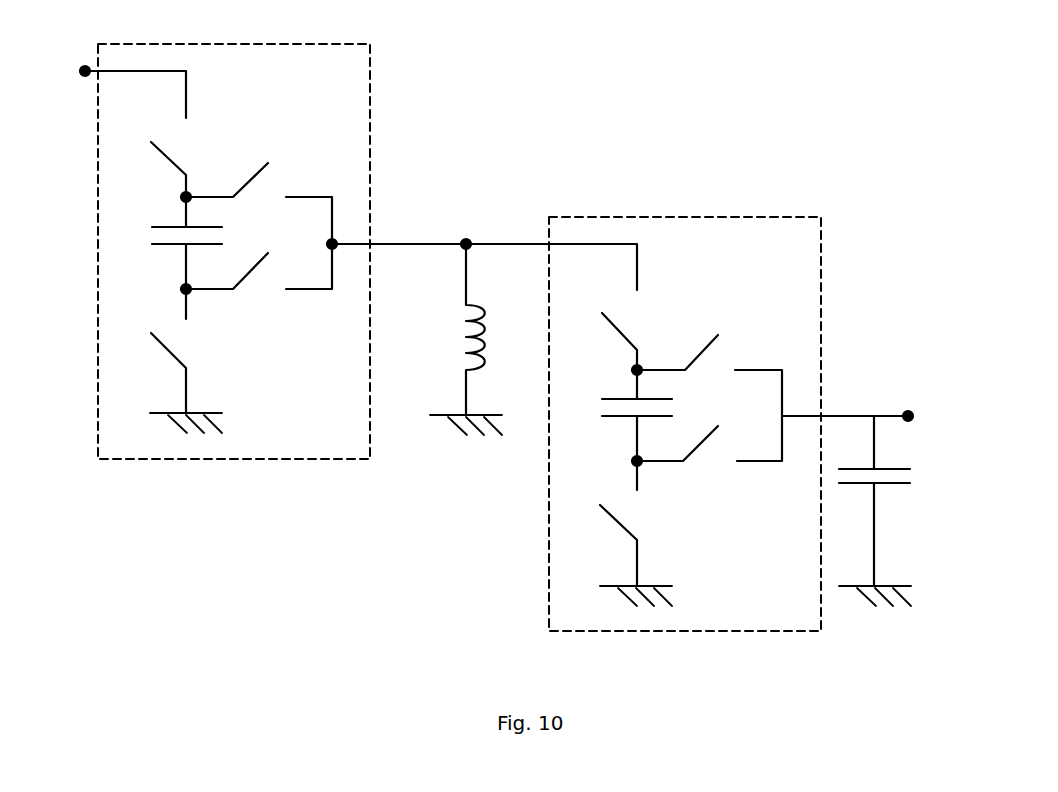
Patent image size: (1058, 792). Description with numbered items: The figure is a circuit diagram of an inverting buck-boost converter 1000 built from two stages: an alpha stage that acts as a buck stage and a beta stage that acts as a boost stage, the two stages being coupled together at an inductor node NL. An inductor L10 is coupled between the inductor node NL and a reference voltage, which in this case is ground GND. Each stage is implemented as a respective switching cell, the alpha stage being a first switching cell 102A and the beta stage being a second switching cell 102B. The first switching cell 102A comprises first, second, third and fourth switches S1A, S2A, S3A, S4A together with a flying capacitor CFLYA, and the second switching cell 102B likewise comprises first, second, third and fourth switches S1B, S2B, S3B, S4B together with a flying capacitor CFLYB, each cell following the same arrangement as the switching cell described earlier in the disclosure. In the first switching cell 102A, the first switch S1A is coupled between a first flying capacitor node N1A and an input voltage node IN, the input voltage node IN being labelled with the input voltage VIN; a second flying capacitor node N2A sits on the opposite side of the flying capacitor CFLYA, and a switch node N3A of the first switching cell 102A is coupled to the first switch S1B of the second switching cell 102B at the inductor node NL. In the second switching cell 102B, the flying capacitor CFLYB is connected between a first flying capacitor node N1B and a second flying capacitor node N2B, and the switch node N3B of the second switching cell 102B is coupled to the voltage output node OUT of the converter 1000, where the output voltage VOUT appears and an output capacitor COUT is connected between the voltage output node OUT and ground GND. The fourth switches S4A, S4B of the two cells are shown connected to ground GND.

The inverting buck-boost converter 1000 is at (501, 319).
The first switching cell 102A is at (365, 83).
The second switching cell 102B is at (815, 253).
The input voltage terminal VIN is at (114, 73).
The input voltage node IN is at (80, 101).
The first switch S1A is at (194, 169).
The second switch S2A is at (259, 203).
The third switch S3A is at (259, 282).
The fourth switch S4A is at (193, 351).
The first flying capacitor node N1A is at (161, 201).
The second node of stage A N2A is at (163, 295).
The switch node N3A is at (307, 235).
The flying capacitor CFLYA is at (163, 243).
The inductor node NL is at (484, 254).
The inductor L10 is at (497, 329).
The first switch S1B is at (644, 341).
The second switch S2B is at (709, 375).
The third switch S3B is at (709, 454).
The fourth switch S4B is at (641, 523).
The first node of stage B N1B is at (612, 373).
The second node of stage B N2B is at (613, 466).
The switch node N3B is at (821, 410).
The flying capacitor CFLYB is at (614, 415).
The output voltage terminal VOUT is at (928, 402).
The voltage output node OUT is at (933, 436).
The output capacitor COUT is at (893, 501).
The ground GND is at (554, 513).